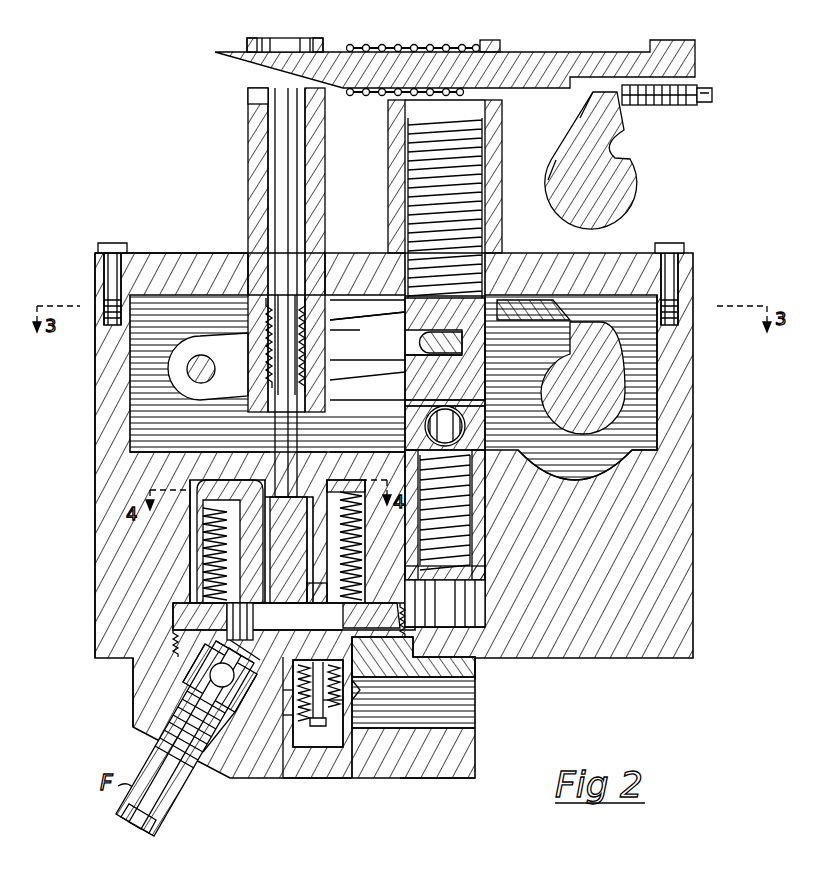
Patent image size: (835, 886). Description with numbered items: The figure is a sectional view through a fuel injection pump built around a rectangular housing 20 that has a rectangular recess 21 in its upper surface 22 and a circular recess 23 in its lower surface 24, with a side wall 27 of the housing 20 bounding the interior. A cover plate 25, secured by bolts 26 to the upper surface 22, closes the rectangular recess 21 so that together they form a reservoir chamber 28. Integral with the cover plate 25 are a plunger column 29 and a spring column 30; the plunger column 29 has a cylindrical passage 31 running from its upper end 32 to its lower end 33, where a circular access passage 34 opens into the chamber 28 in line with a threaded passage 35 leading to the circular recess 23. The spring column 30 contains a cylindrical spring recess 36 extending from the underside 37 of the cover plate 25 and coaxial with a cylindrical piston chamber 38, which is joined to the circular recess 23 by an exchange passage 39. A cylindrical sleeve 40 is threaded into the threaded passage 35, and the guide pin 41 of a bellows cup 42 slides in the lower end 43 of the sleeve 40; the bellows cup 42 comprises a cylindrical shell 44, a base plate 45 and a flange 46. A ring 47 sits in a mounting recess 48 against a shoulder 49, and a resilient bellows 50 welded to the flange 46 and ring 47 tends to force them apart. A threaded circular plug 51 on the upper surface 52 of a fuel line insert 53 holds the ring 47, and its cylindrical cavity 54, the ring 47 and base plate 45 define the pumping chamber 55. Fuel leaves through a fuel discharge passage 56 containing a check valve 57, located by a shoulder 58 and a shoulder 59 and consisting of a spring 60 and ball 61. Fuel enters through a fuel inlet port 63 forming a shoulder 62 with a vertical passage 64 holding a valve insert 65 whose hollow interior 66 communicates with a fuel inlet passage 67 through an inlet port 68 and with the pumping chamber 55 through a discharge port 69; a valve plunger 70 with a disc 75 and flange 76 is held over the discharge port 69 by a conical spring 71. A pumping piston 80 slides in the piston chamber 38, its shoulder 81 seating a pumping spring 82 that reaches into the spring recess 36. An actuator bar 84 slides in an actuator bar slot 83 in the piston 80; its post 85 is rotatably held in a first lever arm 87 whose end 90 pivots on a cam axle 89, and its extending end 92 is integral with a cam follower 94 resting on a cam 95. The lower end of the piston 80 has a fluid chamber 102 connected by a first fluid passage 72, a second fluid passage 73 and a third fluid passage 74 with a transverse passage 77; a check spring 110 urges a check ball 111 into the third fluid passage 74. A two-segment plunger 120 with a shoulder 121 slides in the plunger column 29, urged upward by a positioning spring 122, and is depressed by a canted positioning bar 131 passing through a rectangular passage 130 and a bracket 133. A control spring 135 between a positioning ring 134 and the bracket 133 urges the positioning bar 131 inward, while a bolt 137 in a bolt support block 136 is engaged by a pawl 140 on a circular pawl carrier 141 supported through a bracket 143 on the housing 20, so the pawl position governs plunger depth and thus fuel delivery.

The housing 20 is at (694, 462).
The rectangular recess 21 is at (656, 313).
The upper surface 22 is at (236, 256).
The circular recess 23 is at (192, 556).
The lower surface 24 is at (130, 660).
The cover plate 25 is at (188, 256).
The bolts 26 is at (128, 238).
The left side wall 27 is at (96, 358).
The reservoir chamber 28 is at (630, 445).
The plunger column 29 is at (247, 135).
The spring column 30 is at (503, 150).
The cylindrical passage 31 is at (308, 178).
The end of plunger column 32 is at (250, 38).
The end of plunger column 33 is at (316, 420).
The circular access passage 34 is at (273, 420).
The threaded passage 35 is at (306, 444).
The cylindrical spring recess 36 is at (488, 186).
The underside of cover plate 37 is at (222, 300).
The cylindrical piston chamber 38 is at (486, 460).
The exchange passage 39 is at (400, 449).
The cylindrical sleeve 40 is at (309, 533).
The guide pin 41 is at (308, 588).
The bellows cup 42 is at (240, 480).
The lower end of sleeve 43 is at (317, 593).
The cylindrical shell 44 is at (253, 618).
The base plate 45 is at (254, 656).
The flange 46 is at (333, 490).
The ring 47 is at (371, 615).
The mounting recess 48 is at (175, 626).
The shoulder 49 is at (190, 600).
The bellows 50 is at (205, 528).
The threaded circular plug 51 is at (408, 626).
The upper surface of fuel line insert 52 is at (476, 672).
The fuel line insert 53 is at (447, 778).
The cylindrical cavity 54 is at (178, 640).
The pumping chamber 55 is at (333, 632).
The fuel discharge passage 56 is at (235, 653).
The check valve 57 is at (203, 676).
The shoulder 58 is at (172, 712).
The shoulder 59 is at (240, 670).
The spring 60 is at (222, 722).
The ball 61 is at (222, 675).
The shoulder 62 is at (380, 660).
The fuel inlet port 63 is at (358, 640).
The vertical passage 64 is at (352, 763).
The valve insert 65 is at (330, 778).
The hollow interior 66 is at (317, 717).
The fuel inlet passage 67 is at (415, 716).
The inlet port 68 is at (352, 718).
The discharge port 69 is at (352, 664).
The valve plunger 70 is at (324, 708).
The conical spring 71 is at (285, 696).
The first fluid passage 72 is at (435, 586).
The second fluid passage 73 is at (406, 540).
The third fluid passage 74 is at (404, 402).
The disc 75 is at (355, 690).
The flange 76 is at (290, 718).
The transverse passage 77 is at (485, 395).
The pumping piston 80 is at (487, 372).
The shoulder 81 is at (405, 305).
The pumping spring 82 is at (410, 286).
The actuator bar slot 83 is at (404, 362).
The actuator bar 84 is at (424, 343).
The post 85 is at (412, 342).
The first lever arm 87 is at (362, 344).
The cam axle 89 is at (213, 368).
The end of first lever arm 90 is at (195, 352).
The extending end of lever arm 92 is at (496, 335).
The cam follower 94 is at (560, 310).
The cam 95 is at (618, 358).
The fluid chamber 102 is at (486, 428).
The check spring 110 is at (480, 498).
The check ball 111 is at (445, 426).
The two-segment plunger 120 is at (286, 262).
The shoulder 121 is at (302, 298).
The positioning spring 122 is at (266, 340).
The rectangular passage 130 is at (248, 84).
The positioning bar 131 is at (616, 52).
The bracket 133 is at (500, 44).
The positioning ring 134 is at (342, 47).
The control spring 135 is at (448, 48).
The bolt support block 136 is at (699, 82).
The bolt 137 is at (710, 102).
The pawl 140 is at (601, 126).
The circular pawl carrier 141 is at (640, 189).
The bracket 143 is at (602, 250).